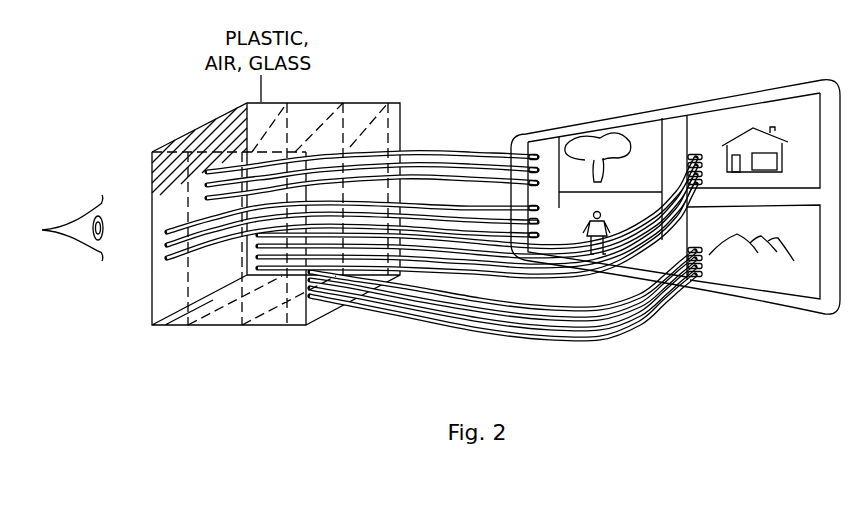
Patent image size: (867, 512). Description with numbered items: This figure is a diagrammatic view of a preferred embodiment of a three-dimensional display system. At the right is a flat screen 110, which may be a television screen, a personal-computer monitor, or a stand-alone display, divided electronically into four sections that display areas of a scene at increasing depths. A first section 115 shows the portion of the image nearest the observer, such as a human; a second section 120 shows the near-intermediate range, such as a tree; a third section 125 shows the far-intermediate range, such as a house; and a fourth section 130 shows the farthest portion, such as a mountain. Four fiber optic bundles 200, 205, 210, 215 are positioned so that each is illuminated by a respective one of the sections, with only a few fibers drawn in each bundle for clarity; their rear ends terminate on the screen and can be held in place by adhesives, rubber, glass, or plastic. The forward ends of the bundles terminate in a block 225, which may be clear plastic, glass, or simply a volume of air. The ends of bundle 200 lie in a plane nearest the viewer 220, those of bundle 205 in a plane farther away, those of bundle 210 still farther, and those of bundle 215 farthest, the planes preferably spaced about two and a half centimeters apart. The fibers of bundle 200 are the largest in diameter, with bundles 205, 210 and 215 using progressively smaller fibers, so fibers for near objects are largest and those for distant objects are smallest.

The screen 110 is at (682, 116).
The first section 115 is at (556, 207).
The second section 120 is at (637, 142).
The third section 125 is at (785, 113).
The fourth section 130 is at (753, 282).
The fiber optic bundle 200 is at (168, 327).
The fiber optic bundle 205 is at (208, 327).
The fiber optic bundle 210 is at (260, 327).
The fiber optic bundle 215 is at (309, 327).
The viewer 220 is at (72, 222).
The block 225 is at (152, 298).